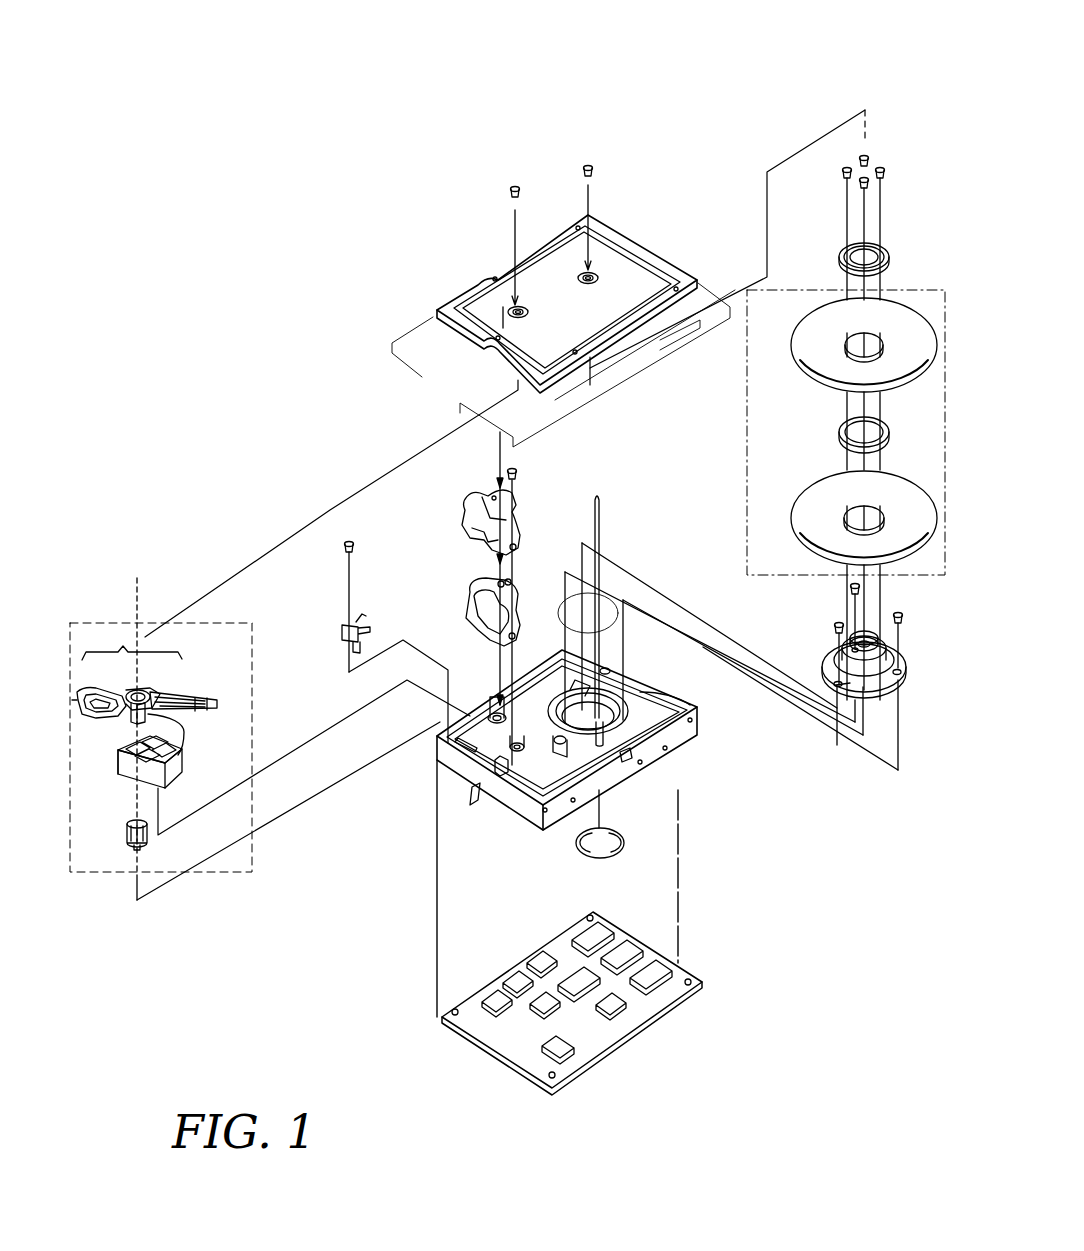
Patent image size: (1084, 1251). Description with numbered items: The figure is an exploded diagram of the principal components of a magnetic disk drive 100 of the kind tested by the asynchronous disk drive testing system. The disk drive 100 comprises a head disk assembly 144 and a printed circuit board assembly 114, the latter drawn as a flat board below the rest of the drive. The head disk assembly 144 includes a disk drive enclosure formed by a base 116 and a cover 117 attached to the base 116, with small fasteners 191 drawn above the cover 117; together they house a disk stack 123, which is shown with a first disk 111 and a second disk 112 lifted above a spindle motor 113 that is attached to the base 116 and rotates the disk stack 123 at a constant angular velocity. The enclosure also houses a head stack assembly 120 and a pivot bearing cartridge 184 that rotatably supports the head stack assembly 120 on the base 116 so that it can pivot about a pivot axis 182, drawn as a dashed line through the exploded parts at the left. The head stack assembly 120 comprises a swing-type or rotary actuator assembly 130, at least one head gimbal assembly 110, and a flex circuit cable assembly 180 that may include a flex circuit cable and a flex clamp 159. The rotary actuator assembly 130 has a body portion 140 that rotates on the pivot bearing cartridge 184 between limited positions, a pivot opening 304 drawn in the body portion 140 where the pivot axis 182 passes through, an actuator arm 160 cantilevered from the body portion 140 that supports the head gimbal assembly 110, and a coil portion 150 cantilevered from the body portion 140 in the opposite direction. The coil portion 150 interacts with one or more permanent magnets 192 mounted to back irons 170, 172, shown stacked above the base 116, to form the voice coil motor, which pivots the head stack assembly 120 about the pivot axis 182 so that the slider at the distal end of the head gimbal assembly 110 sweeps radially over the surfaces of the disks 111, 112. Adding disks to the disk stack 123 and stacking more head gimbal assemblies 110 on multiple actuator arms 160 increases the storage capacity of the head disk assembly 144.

The magnetic disk drive 100 is at (302, 68).
The head gimbal assembly 110 is at (216, 698).
The first disk 111 is at (800, 497).
The second disk 112 is at (810, 380).
The spindle motor 113 is at (830, 658).
The printed circuit board assembly 114 is at (620, 1036).
The base 116 is at (688, 742).
The cover 117 is at (463, 290).
The head stack assembly 120 is at (108, 625).
The disk stack 123 is at (745, 490).
The rotary actuator assembly 130 is at (132, 642).
The body portion 140 is at (150, 692).
The head disk assembly 144 is at (783, 910).
The coil portion 150 is at (96, 724).
The flex clamp 159 is at (135, 767).
The actuator arm 160 is at (188, 715).
The back iron 170 is at (495, 512).
The back iron 172 is at (510, 592).
The flex circuit cable assembly 180 is at (182, 763).
The pivot axis 182 is at (138, 586).
The pivot bearing cartridge 184 is at (126, 840).
The cover screws 191 is at (522, 185).
The permanent magnets 192 is at (470, 610).
The pivot bore 304 is at (133, 690).